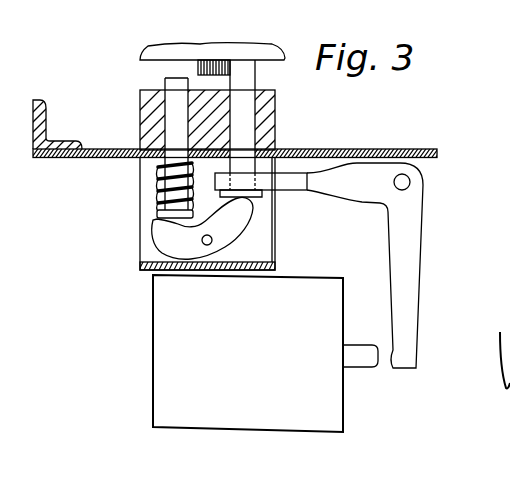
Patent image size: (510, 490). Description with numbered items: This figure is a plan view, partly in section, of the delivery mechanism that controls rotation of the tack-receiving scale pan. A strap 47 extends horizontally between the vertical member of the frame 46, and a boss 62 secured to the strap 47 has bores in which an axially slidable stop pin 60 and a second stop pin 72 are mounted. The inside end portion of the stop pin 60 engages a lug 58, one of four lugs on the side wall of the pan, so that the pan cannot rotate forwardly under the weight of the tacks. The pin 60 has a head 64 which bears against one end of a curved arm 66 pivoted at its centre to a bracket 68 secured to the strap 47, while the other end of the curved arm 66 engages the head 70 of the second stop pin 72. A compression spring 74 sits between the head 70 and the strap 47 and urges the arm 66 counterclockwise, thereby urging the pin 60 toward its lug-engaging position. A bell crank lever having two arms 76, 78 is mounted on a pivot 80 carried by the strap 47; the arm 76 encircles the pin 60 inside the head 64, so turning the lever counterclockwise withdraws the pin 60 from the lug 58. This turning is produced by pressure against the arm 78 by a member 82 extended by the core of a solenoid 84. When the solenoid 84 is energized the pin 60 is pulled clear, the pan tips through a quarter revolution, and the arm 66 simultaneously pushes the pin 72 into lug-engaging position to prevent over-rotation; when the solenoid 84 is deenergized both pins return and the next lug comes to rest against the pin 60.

The frame 46 is at (40, 109).
The strap 47 is at (82, 157).
The lug 58 is at (209, 63).
The stop pin 60 is at (243, 63).
The boss 62 is at (276, 124).
The head 64 is at (265, 192).
The curved arm 66 is at (235, 230).
The bracket 68 is at (148, 248).
The head 70 is at (160, 213).
The second stop pin 72 is at (168, 85).
The compression spring 74 is at (167, 175).
The arm of bell crank lever 76 is at (359, 197).
The arm of bell crank lever 78 is at (410, 298).
The pivot 80 is at (410, 182).
The member 82 is at (368, 366).
The solenoid 84 is at (332, 413).